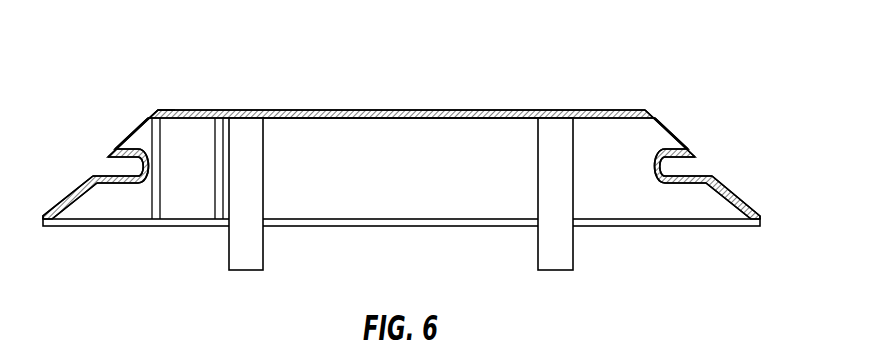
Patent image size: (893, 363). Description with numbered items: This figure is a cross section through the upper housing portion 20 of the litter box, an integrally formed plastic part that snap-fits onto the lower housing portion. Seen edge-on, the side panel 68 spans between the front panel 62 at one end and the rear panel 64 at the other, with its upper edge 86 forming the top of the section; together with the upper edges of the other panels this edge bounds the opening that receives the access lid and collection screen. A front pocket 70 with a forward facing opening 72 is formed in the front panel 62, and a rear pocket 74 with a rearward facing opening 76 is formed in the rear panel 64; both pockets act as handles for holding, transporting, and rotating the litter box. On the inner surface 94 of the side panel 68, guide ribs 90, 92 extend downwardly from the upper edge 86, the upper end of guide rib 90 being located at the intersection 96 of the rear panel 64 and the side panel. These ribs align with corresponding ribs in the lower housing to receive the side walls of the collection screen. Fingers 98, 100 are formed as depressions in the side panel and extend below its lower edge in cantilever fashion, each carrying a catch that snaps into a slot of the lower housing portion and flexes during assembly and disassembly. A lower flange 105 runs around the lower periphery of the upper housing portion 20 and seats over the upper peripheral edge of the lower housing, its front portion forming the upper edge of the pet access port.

The upper housing portion 20 is at (527, 98).
The front panel 62 is at (682, 133).
The rear panel 64 is at (128, 130).
The side panel 68 is at (397, 138).
The front pocket 70 is at (683, 182).
The forward facing opening 72 is at (693, 167).
The rear pocket 74 is at (108, 183).
The rearward facing opening 76 is at (100, 167).
The upper edge 86 is at (323, 110).
The guide rib 90 is at (162, 145).
The guide rib 92 is at (213, 147).
The inner surface 94 is at (414, 178).
The intersection 96 is at (157, 110).
The finger 98 is at (555, 167).
The finger 100 is at (252, 138).
The lower flange 105 is at (760, 222).